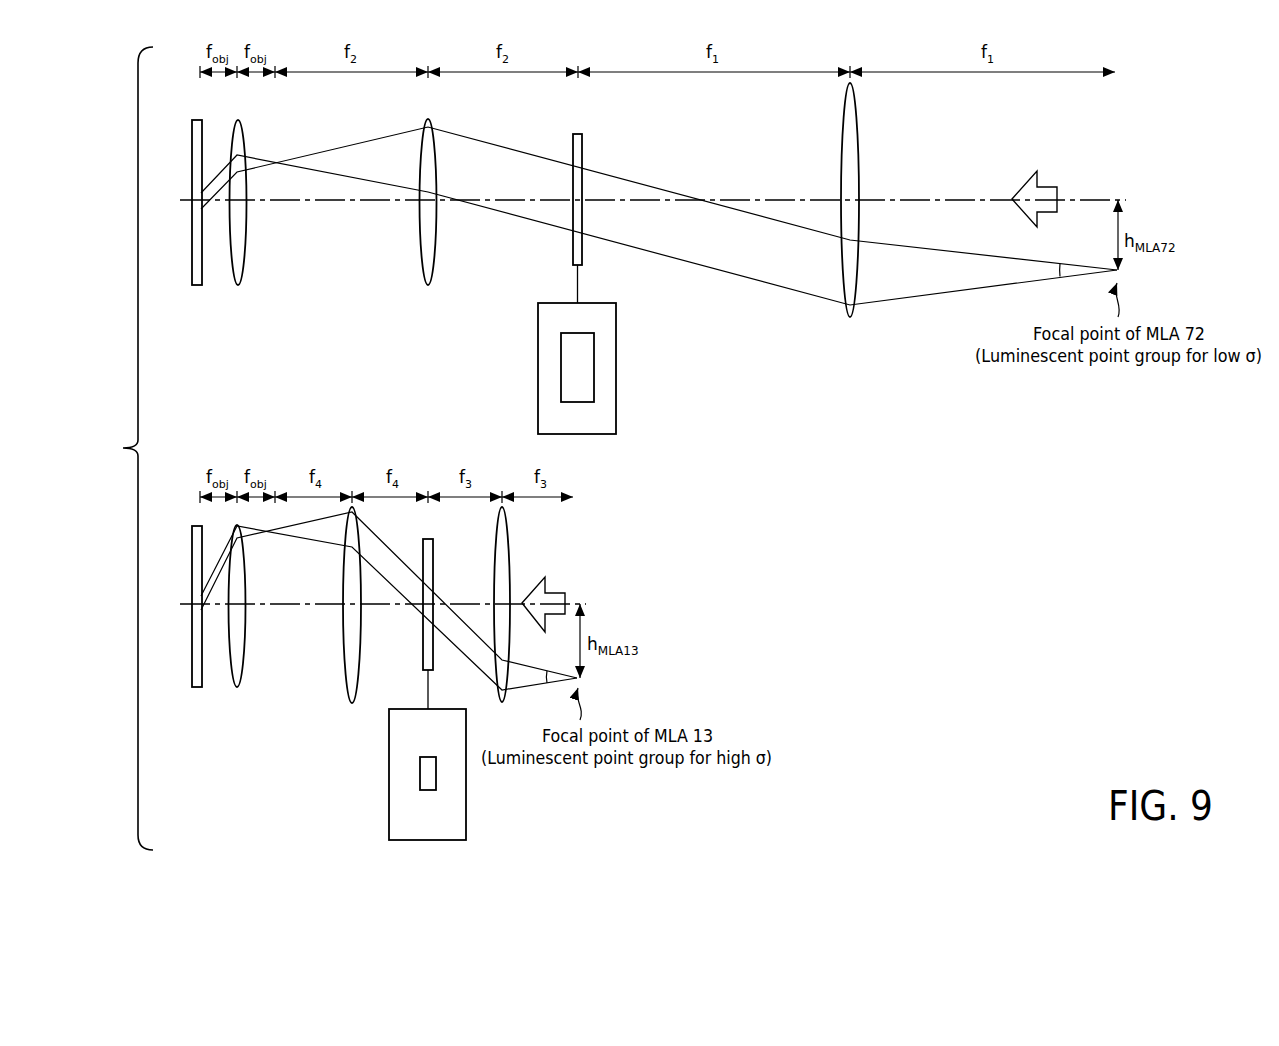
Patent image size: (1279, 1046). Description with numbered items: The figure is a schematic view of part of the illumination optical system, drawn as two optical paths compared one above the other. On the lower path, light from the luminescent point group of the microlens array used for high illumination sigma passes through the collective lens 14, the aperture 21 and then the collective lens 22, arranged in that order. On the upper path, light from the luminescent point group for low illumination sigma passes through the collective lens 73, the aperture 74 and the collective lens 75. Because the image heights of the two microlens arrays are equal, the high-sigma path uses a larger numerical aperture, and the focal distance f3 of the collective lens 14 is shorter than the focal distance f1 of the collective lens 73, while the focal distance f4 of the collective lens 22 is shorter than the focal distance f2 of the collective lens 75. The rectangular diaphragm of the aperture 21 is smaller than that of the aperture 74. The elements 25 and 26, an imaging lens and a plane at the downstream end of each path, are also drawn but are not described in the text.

The specimen 26 is at (205, 122).
The objective lens 25 is at (245, 126).
The collective lens 75 is at (432, 124).
The collective lens 73 is at (857, 104).
The aperture 74 is at (617, 403).
The collective lens 22 is at (360, 672).
The collective lens 14 is at (510, 537).
The aperture 21 is at (466, 812).